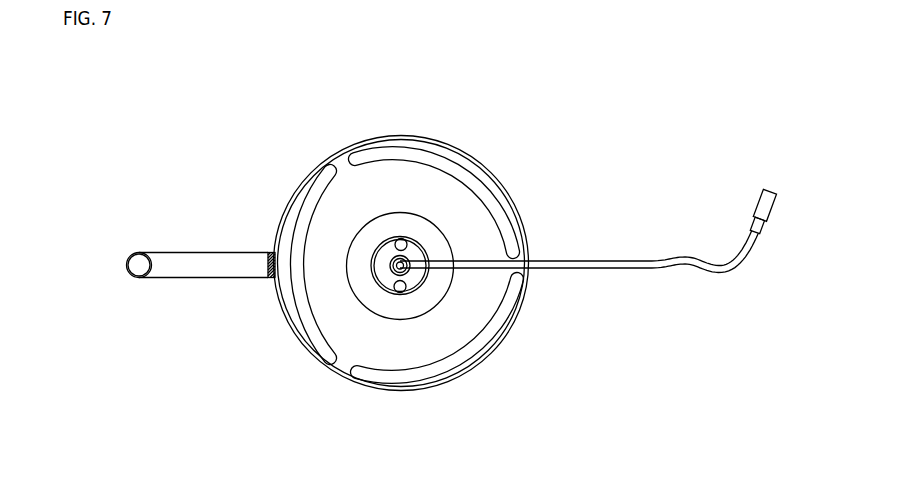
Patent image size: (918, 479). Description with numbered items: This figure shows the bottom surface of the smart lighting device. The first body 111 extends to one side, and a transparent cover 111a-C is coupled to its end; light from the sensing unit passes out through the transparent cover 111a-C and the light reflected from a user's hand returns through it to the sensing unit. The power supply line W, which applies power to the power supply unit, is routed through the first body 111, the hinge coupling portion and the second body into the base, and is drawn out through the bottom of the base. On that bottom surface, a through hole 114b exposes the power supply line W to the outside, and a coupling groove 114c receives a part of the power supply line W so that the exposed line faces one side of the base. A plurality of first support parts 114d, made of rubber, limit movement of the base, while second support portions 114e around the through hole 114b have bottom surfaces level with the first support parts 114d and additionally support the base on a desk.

The first body 111 is at (210, 256).
The transparent cover 111a-C is at (138, 268).
The through hole 114b is at (394, 274).
The coupling groove 114c is at (468, 268).
The first support parts 114d is at (500, 198).
The second support portions 114e is at (401, 254).
The power supply line W is at (596, 262).